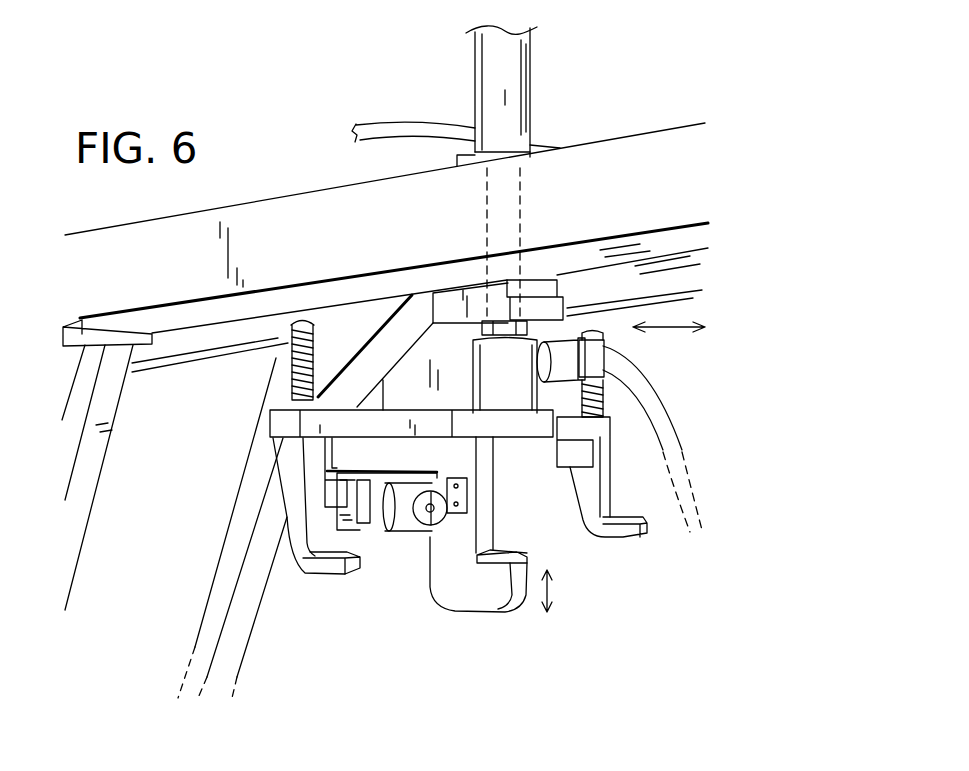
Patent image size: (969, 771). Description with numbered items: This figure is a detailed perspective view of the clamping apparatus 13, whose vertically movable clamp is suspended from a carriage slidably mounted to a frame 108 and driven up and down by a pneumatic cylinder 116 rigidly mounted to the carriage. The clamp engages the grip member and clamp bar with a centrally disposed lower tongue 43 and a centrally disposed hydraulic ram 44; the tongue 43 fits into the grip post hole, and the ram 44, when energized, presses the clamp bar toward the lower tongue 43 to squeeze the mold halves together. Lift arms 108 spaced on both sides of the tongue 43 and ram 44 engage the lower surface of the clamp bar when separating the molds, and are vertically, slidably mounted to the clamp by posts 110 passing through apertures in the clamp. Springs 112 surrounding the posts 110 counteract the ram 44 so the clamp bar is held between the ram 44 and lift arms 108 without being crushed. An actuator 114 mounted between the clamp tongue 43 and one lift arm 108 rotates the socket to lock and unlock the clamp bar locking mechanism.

The clamping apparatus 13 is at (650, 113).
The lower tongue 43 is at (522, 567).
The hydraulic ram 44 is at (487, 370).
The lift arms 108 is at (222, 215).
The posts 110 is at (303, 320).
The springs 112 is at (285, 358).
The actuator 114 is at (382, 552).
The pneumatic cylinder 116 is at (510, 58).